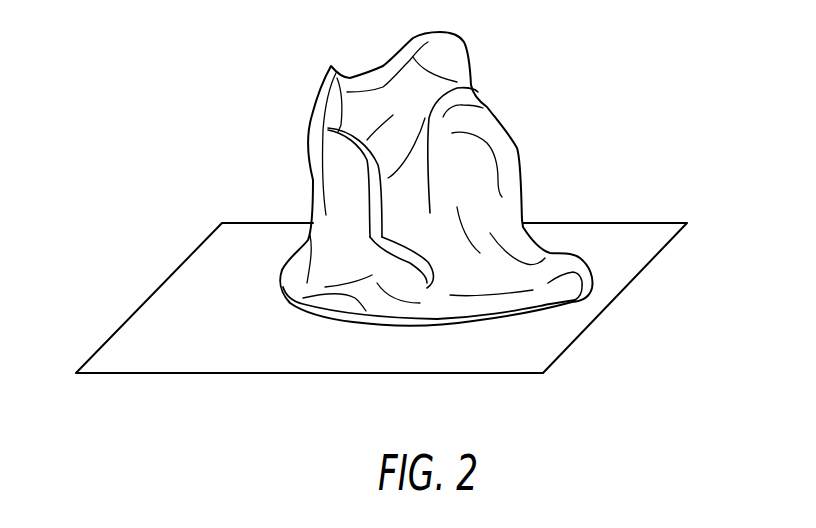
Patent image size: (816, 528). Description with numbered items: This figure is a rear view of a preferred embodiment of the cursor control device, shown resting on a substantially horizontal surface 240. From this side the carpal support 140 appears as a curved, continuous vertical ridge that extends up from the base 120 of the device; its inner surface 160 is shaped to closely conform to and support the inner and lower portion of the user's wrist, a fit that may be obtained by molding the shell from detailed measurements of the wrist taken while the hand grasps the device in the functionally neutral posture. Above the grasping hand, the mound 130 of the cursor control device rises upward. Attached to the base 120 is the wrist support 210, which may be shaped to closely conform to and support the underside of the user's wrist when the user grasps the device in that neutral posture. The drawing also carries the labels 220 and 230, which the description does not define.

The base 120 is at (590, 296).
The mound 130 is at (480, 128).
The carpal support 140 is at (367, 160).
The inner surface 160 is at (387, 238).
The wrist support 210 is at (524, 313).
The fold line 220 is at (463, 278).
The upper lobe 230 is at (478, 92).
The substantially horizontal surface 240 is at (170, 333).